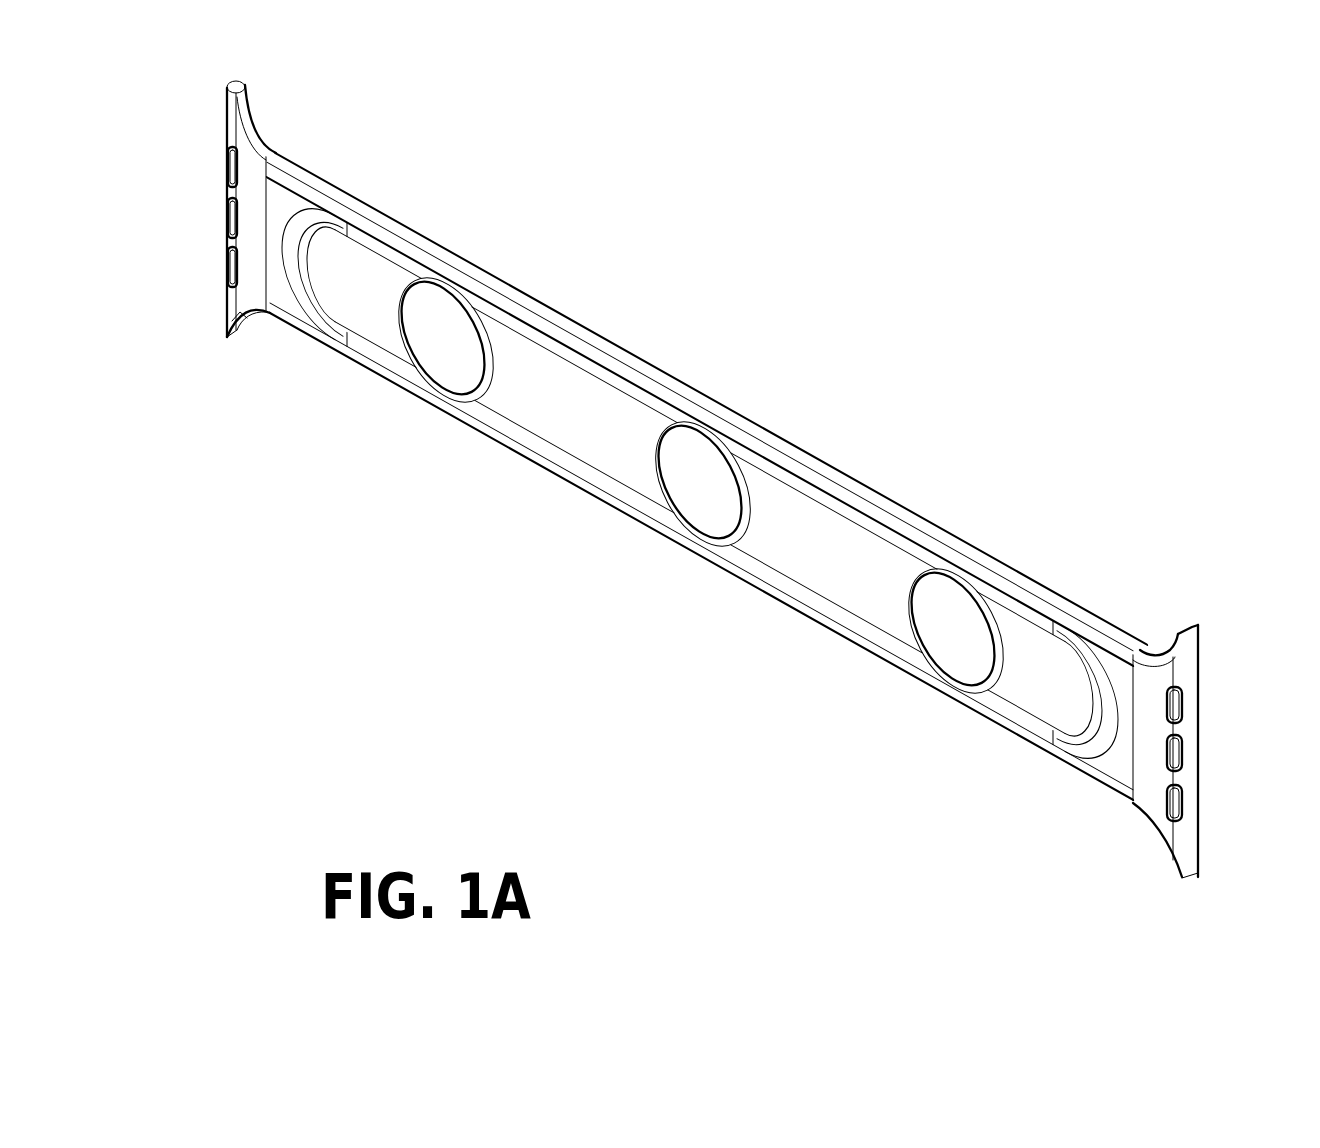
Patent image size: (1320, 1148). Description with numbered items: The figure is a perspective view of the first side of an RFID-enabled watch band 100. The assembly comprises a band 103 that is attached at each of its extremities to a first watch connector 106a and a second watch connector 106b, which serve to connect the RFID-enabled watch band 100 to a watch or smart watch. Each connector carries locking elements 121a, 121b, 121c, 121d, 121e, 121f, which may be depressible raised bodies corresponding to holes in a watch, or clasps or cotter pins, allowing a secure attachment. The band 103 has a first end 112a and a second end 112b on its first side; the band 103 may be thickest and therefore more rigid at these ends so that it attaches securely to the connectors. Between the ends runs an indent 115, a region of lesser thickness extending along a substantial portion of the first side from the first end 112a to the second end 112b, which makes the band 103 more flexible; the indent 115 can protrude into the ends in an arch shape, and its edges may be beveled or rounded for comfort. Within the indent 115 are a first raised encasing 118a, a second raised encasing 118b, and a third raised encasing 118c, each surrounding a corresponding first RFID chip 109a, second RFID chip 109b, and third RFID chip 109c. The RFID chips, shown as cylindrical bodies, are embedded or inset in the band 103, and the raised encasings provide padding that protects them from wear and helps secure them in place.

The RFID-enabled watch band 100 is at (524, 534).
The band 103 is at (601, 335).
The first watch connector 106a is at (239, 330).
The second watch connector 106b is at (1148, 818).
The first RFID chip 109a is at (437, 357).
The second RFID chip 109b is at (697, 502).
The third RFID chip 109c is at (947, 650).
The first end 112a is at (297, 198).
The second end 112b is at (1110, 660).
The indent 115 is at (366, 257).
The first raised encasing 118a is at (449, 294).
The second raised encasing 118b is at (698, 433).
The third raised encasing 118c is at (958, 580).
The locking element 121a is at (230, 167).
The locking element 121b is at (230, 218).
The locking element 121c is at (230, 269).
The locking element 121d is at (1176, 712).
The locking element 121e is at (1176, 758).
The locking element 121f is at (1176, 803).